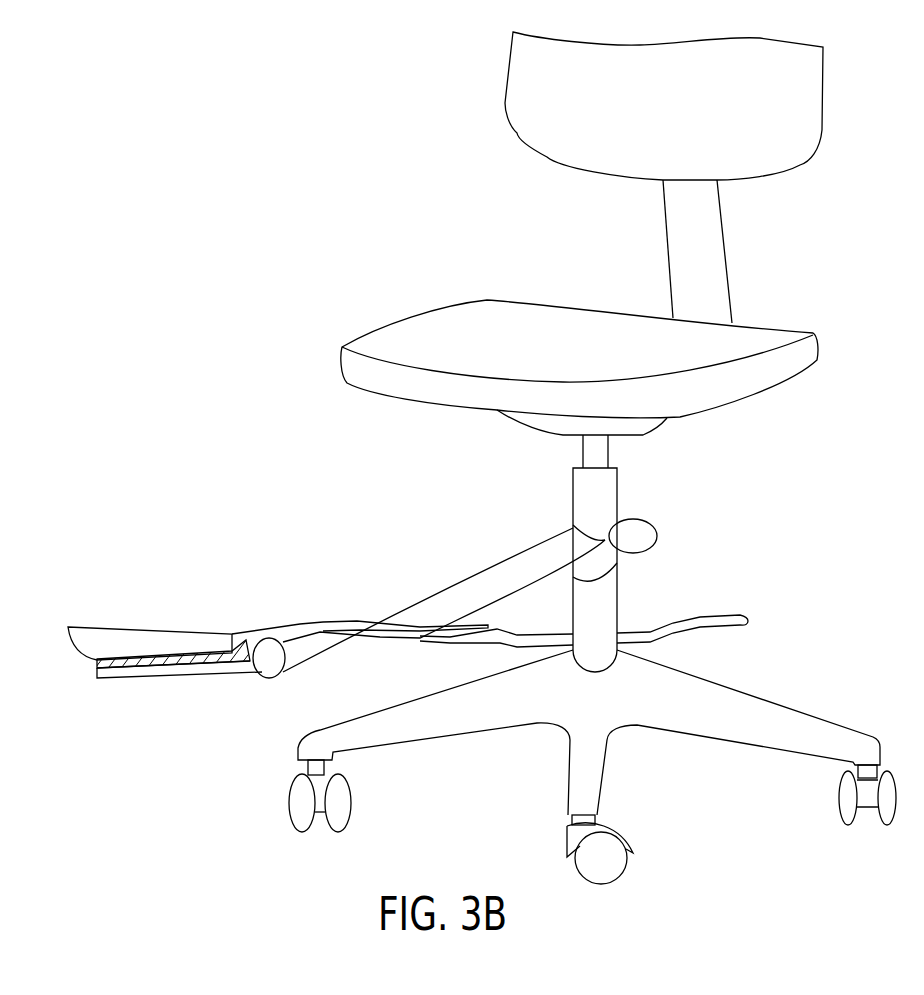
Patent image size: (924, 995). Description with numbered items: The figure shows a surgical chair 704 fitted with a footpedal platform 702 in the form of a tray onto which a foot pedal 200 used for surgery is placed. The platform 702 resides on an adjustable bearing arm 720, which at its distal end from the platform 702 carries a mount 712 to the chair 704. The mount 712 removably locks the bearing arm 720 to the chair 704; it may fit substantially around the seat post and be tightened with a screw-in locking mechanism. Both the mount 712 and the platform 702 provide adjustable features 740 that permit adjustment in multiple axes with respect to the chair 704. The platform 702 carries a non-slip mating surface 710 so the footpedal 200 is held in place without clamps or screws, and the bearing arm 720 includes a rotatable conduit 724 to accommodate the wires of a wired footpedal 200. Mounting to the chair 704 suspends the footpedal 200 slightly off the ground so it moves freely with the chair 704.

The surgeon's chair 704 is at (413, 318).
The mount 712 is at (612, 523).
The adjustable feature 740 is at (658, 540).
The conduit 724 is at (323, 625).
The bearing arm 720 is at (390, 622).
The footpedal 200 is at (128, 635).
The non-slip mating surface 710 is at (97, 668).
The footpedal platform 702 is at (102, 678).